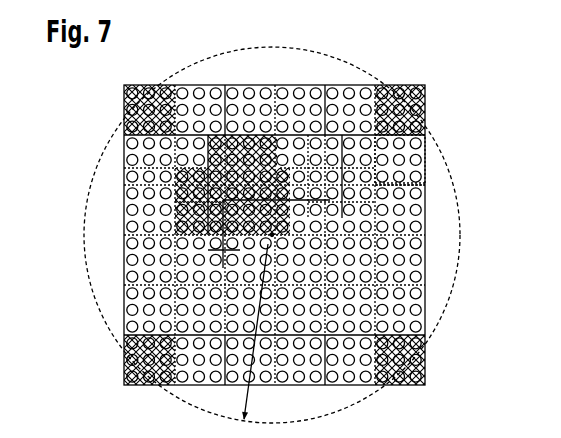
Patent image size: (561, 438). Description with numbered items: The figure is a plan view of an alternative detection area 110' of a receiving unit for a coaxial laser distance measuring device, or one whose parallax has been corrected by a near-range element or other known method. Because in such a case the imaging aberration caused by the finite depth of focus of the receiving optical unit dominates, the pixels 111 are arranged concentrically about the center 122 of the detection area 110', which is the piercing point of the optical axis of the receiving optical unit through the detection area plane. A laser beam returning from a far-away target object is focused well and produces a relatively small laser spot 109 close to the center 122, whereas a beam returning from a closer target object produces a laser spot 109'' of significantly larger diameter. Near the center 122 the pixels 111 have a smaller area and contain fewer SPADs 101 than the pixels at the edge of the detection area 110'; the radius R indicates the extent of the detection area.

The SPAD 101 is at (321, 235).
The laser spot 109 is at (171, 174).
The laser spot 109'' is at (443, 158).
The pixel 111 is at (299, 216).
The detection area 110' is at (291, 235).
The center 122 is at (153, 273).
The radius R is at (254, 332).